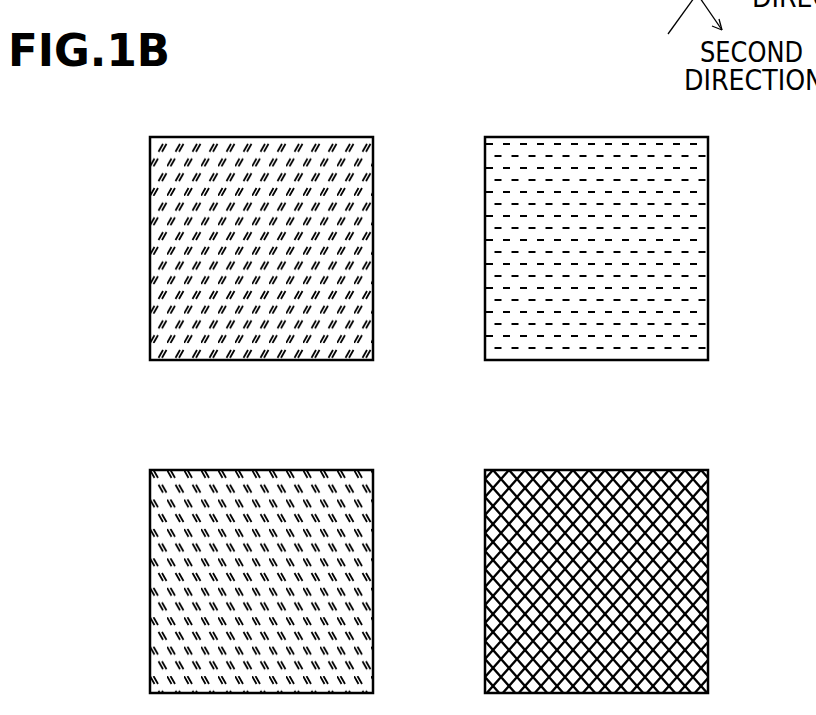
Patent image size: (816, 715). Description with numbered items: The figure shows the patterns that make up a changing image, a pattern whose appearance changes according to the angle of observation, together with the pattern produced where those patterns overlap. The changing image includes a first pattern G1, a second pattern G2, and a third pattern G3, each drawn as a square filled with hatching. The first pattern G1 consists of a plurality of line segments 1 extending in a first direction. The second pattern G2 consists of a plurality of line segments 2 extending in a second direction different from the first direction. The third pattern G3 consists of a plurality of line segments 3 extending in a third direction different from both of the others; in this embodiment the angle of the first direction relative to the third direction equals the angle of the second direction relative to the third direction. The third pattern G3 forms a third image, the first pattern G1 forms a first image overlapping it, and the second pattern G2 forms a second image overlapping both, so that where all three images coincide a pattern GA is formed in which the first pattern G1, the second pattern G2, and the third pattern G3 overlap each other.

The line segments 1 is at (313, 260).
The line segments 2 is at (215, 593).
The line segments 3 is at (538, 217).
The first pattern G1 is at (281, 225).
The second pattern G2 is at (243, 558).
The third pattern G3 is at (596, 225).
The pattern GA is at (627, 470).